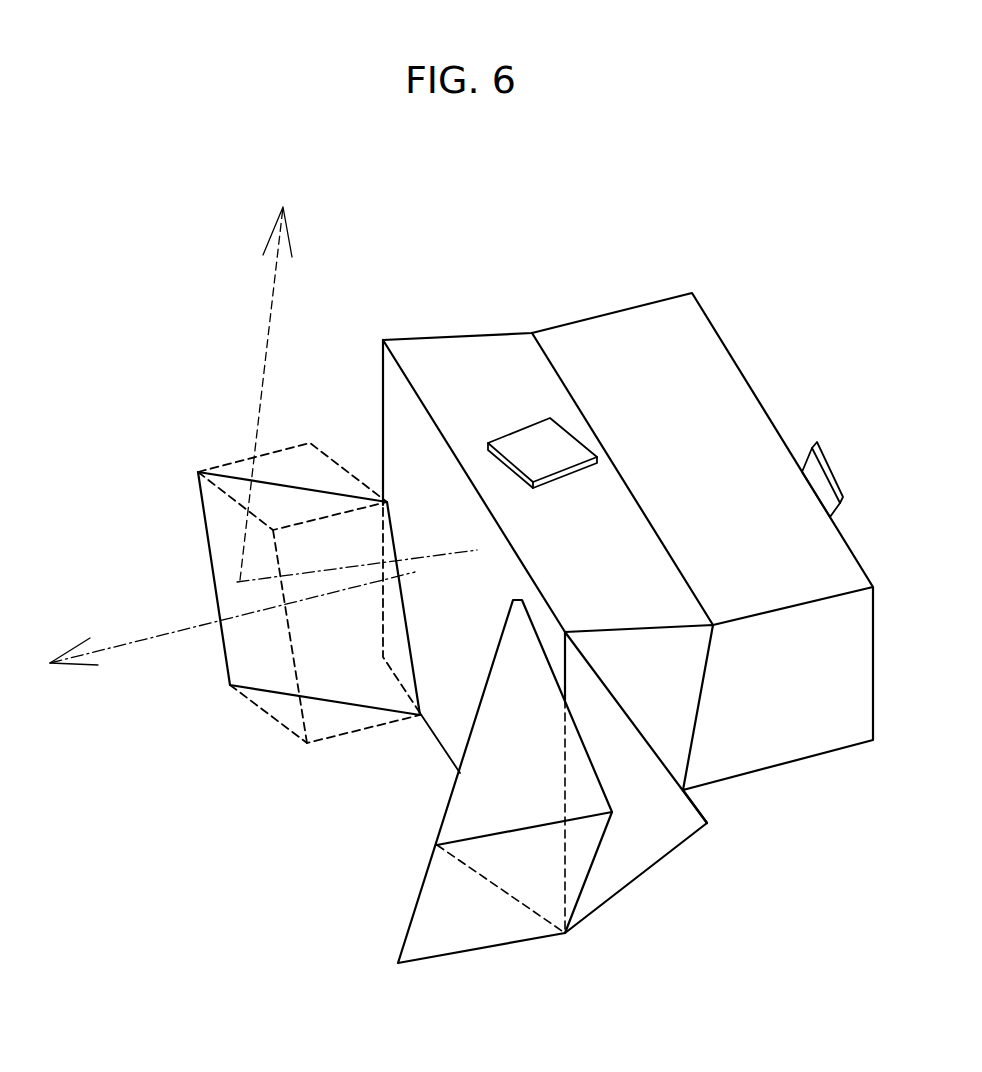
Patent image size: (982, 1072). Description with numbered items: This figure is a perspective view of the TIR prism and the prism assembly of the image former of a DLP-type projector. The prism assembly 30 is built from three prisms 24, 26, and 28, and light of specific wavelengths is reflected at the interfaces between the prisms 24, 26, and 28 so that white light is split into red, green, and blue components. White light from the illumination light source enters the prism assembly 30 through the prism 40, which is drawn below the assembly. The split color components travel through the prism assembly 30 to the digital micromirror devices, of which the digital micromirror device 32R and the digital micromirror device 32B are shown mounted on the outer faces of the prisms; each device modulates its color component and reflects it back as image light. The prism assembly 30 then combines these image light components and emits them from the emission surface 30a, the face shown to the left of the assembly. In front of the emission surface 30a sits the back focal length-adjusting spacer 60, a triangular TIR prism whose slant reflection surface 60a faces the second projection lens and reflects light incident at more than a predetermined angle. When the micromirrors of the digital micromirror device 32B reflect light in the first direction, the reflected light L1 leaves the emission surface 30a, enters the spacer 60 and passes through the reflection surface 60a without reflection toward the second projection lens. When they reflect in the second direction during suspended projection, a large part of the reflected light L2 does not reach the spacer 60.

The prism 24 is at (650, 833).
The prism 26 is at (508, 356).
The prism 28 is at (632, 328).
The prism assembly 30 is at (797, 343).
The emission surface 30a is at (450, 713).
The digital micromirror device 32R is at (532, 442).
The digital micromirror device 32B is at (823, 452).
The prism 40 is at (473, 922).
The back focal length-adjusting spacer 60 is at (242, 462).
The reflection surface 60a is at (223, 532).
The reflected light L1 is at (406, 573).
The reflected light L2 is at (435, 554).